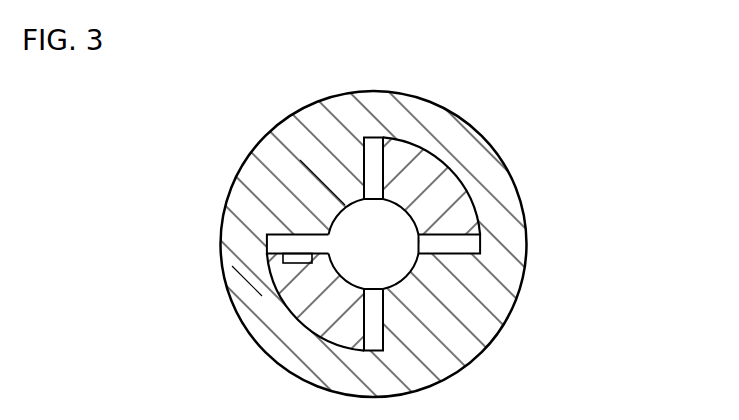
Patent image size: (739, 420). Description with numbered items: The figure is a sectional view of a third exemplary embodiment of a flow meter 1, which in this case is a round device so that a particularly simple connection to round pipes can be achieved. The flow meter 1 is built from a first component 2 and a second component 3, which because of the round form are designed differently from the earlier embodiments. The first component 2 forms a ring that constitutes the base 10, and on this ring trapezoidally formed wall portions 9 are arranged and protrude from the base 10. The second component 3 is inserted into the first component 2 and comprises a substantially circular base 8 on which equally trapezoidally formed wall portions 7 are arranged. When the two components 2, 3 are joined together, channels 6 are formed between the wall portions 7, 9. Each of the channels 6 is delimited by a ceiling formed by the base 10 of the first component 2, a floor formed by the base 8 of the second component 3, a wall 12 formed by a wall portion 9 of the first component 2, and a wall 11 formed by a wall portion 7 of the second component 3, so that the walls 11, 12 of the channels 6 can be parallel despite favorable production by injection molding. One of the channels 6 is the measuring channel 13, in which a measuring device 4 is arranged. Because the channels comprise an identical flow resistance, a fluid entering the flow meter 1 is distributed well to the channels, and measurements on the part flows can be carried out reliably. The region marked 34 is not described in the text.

The flow meter 1 is at (531, 112).
The first component 2 is at (524, 186).
The second component 3 is at (366, 236).
The measuring device 4 is at (290, 262).
The channels 6 is at (373, 155).
The wall portions 7 is at (318, 308).
The base 8 is at (409, 282).
The wall portions 9 is at (325, 203).
The base 10 is at (237, 277).
The wall 11 is at (386, 157).
The wall 12 is at (353, 166).
The measuring channel 13 is at (268, 236).
The interface surface 34 is at (478, 211).